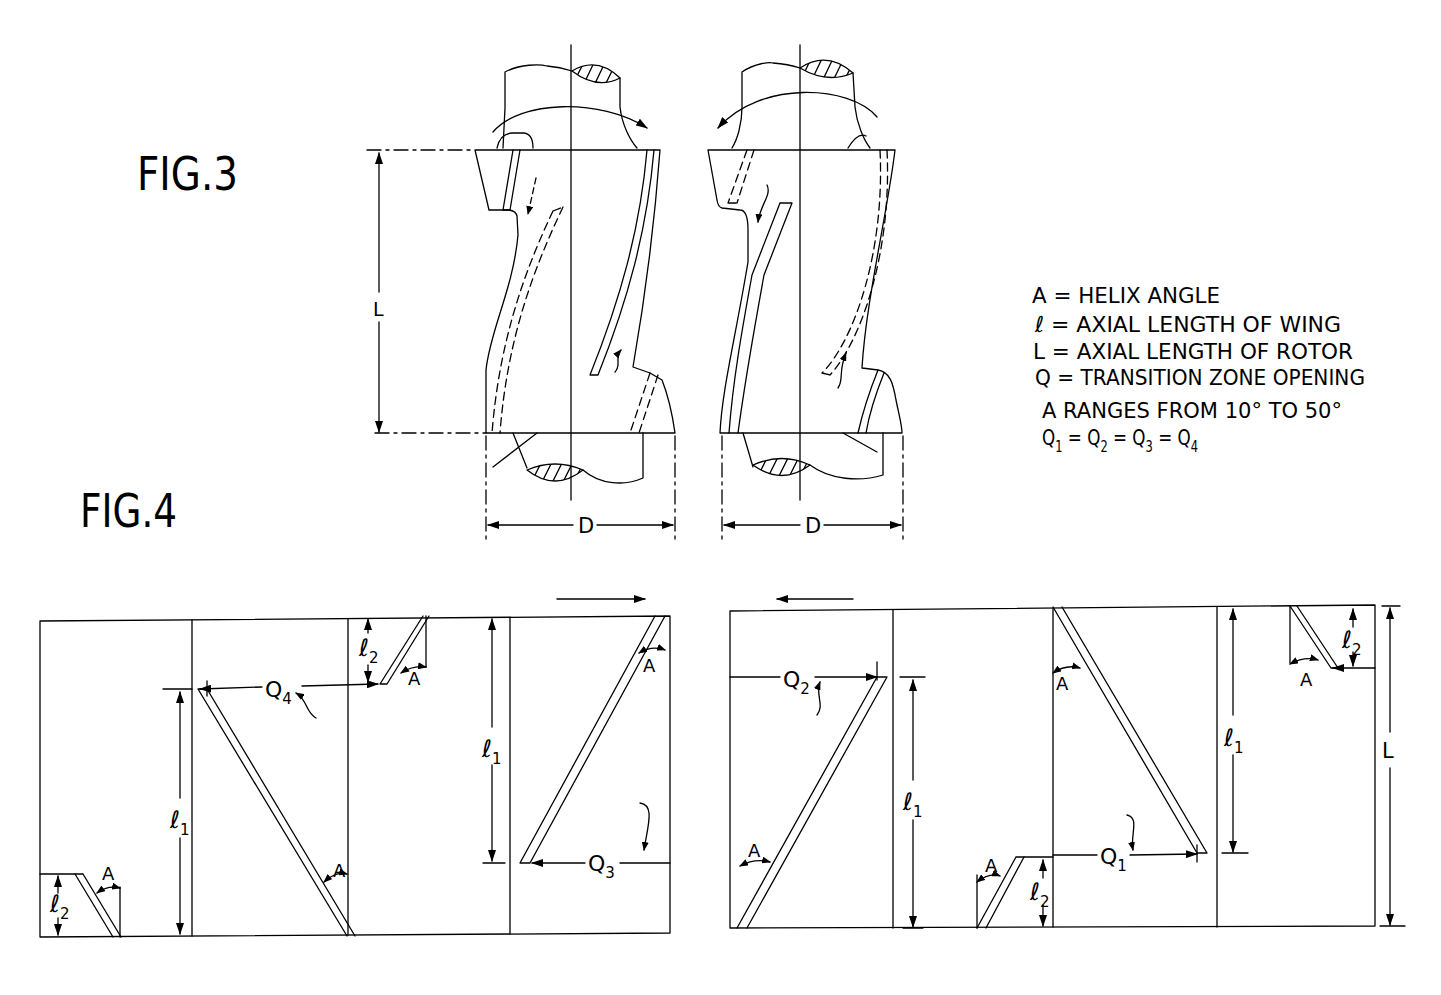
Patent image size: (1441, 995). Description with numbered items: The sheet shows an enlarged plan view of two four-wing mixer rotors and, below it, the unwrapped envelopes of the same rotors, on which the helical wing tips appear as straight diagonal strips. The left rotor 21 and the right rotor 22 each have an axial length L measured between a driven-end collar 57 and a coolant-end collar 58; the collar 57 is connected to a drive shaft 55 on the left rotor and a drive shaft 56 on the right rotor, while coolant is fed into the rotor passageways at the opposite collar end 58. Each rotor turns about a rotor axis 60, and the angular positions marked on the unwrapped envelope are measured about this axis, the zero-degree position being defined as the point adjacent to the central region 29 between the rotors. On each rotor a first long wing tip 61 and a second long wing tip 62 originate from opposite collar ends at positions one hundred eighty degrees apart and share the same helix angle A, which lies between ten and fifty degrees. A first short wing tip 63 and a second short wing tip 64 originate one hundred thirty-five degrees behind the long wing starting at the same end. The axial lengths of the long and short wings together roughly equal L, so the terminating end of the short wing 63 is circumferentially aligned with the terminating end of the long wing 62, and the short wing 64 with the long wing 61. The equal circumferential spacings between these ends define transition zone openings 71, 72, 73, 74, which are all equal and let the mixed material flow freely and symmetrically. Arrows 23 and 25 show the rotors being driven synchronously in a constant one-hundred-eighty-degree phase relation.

In FIG. 3, the left rotor 21 is at (512, 255).
In FIG. 4, the left rotor 21 is at (146, 611).
In FIG. 3, the right rotor 22 is at (865, 318).
In FIG. 4, the right rotor 22 is at (1240, 600).
In FIG. 3, the arrow indicating rotation of left rotor 23 is at (523, 108).
In FIG. 4, the arrow indicating rotation of left rotor 23 is at (596, 599).
In FIG. 3, the arrow indicating rotation of right rotor 25 is at (857, 92).
In FIG. 4, the arrow indicating rotation of right rotor 25 is at (812, 599).
In FIG. 3, the central region 29 is at (701, 301).
In FIG. 4, the central region 29 is at (712, 794).
In FIG. 3, the drive shaft 55 is at (515, 88).
In FIG. 3, the drive shaft 56 is at (852, 83).
In FIG. 3, the collar end (driven end) 57 is at (508, 138).
In FIG. 3, the collar end (coolant end) 58 is at (493, 467).
In FIG. 3, the rotor axis 60 is at (571, 56).
In FIG. 3, the first long wing tip 61 is at (637, 268).
In FIG. 4, the first long wing tip 61 is at (608, 712).
In FIG. 3, the second long wing tip 62 is at (507, 293).
In FIG. 4, the second long wing tip 62 is at (278, 798).
In FIG. 3, the first short wing tip 63 is at (503, 187).
In FIG. 4, the first short wing tip 63 is at (383, 686).
In FIG. 3, the second short wing tip 64 is at (652, 395).
In FIG. 4, the second short wing tip 64 is at (77, 872).
In FIG. 3, the transition zone opening 71 is at (834, 384).
In FIG. 4, the transition zone opening 71 is at (1119, 830).
In FIG. 3, the transition zone opening 72 is at (774, 189).
In FIG. 4, the transition zone opening 72 is at (811, 711).
In FIG. 3, the transition zone opening 73 is at (607, 384).
In FIG. 4, the transition zone opening 73 is at (633, 825).
In FIG. 3, the transition zone opening 74 is at (548, 187).
In FIG. 4, the transition zone opening 74 is at (312, 717).